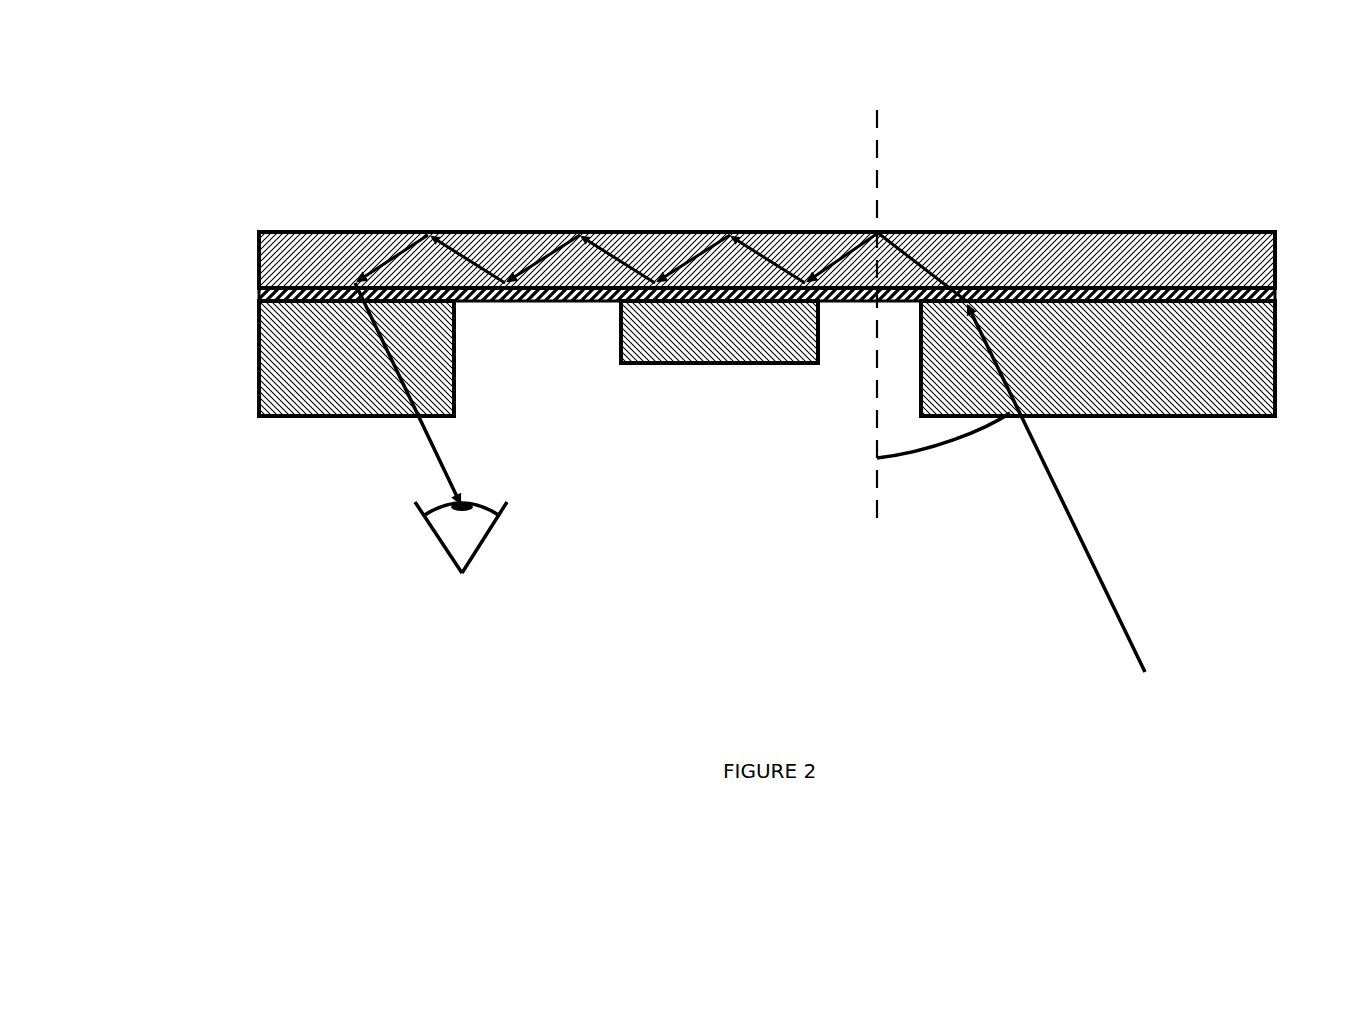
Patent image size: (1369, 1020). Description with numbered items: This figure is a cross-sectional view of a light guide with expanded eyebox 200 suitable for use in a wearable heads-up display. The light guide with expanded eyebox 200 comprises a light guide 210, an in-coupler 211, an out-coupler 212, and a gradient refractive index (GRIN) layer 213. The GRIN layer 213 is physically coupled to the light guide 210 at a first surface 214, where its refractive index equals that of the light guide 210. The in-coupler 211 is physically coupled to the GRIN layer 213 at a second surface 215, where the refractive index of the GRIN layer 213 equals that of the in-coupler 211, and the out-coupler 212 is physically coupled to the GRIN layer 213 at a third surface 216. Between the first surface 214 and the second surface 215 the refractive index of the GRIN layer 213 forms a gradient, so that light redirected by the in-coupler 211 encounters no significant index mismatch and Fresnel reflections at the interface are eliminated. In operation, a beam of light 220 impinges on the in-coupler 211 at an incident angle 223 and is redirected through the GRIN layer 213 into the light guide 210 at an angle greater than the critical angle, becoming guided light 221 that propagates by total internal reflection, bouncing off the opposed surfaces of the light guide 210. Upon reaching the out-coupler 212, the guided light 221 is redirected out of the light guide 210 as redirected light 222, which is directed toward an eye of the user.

The light guide with expanded eyebox 200 is at (322, 517).
The light guide 210 is at (317, 280).
The in-coupler 211 is at (1230, 323).
The out-coupler 212 is at (272, 315).
The gradient RI (GRIN) layer 213 is at (1277, 283).
The first surface 214 is at (693, 343).
The second surface 215 is at (1123, 290).
The third surface 216 is at (342, 305).
The beam of light 220 is at (1075, 545).
The guided light 221 is at (828, 277).
The redirected light 222 is at (420, 432).
The incident angle 223 is at (1003, 413).